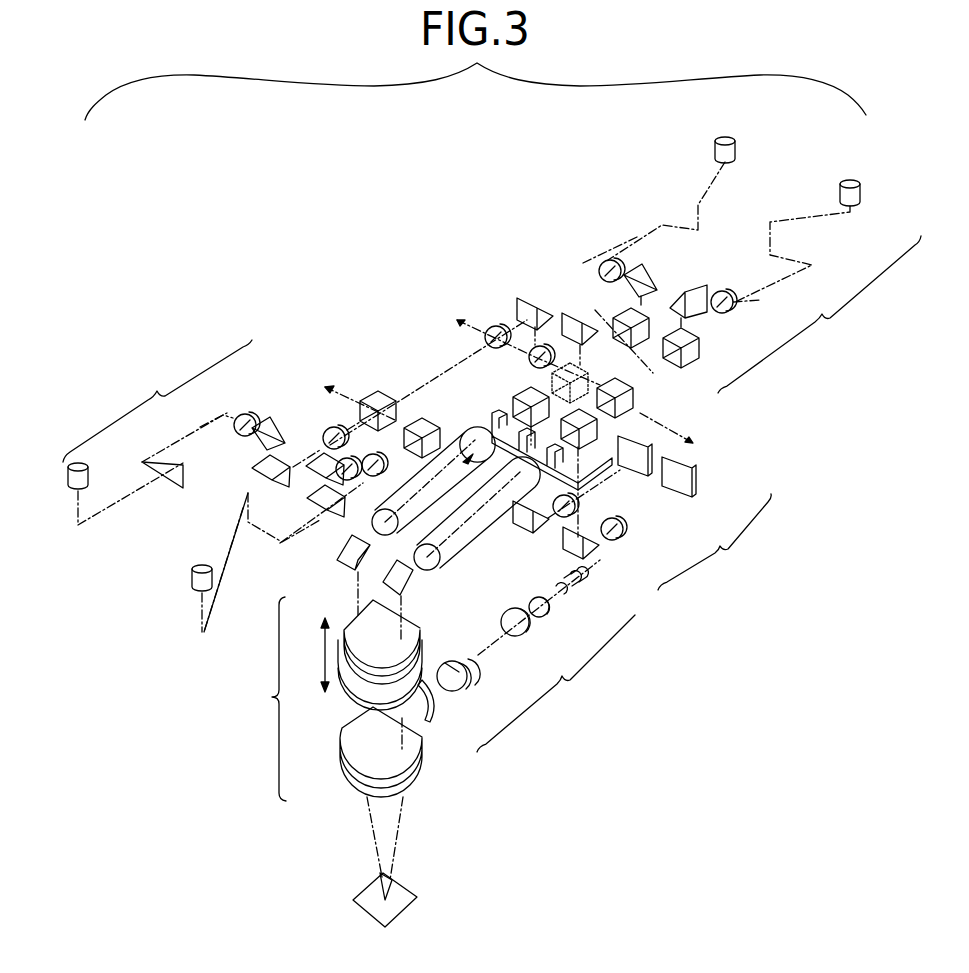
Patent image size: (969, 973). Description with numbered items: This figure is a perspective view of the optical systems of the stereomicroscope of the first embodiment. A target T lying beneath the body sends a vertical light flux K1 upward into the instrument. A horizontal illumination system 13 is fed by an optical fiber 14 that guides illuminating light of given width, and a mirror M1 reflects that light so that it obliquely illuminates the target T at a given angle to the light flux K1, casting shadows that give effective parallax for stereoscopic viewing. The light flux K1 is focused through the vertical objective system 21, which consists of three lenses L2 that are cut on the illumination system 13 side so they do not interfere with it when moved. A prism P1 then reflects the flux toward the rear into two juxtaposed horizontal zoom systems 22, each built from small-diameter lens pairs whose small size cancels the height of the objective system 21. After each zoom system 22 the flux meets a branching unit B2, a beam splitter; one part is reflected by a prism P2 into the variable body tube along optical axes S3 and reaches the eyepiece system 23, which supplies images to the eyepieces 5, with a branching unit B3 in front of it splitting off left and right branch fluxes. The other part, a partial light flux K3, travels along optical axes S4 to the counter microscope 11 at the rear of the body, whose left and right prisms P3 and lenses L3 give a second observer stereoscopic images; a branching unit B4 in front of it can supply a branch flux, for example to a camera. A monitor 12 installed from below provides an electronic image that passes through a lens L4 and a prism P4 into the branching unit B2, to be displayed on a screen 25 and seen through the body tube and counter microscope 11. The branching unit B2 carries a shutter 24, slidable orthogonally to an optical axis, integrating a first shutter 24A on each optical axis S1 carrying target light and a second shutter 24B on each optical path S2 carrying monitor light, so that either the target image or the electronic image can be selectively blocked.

The eyepieces 5 is at (192, 578).
The counter microscope 11 is at (819, 314).
The monitor 12 is at (714, 542).
The illumination system 13 is at (556, 683).
The optical fiber 14 is at (575, 585).
The objective system 21 is at (261, 699).
The zoom systems 22 is at (470, 555).
The eyepiece system 23 is at (157, 401).
The shutter 24 is at (598, 500).
The first shutter 24A is at (500, 430).
The second shutter 24B is at (640, 452).
The screen 25 is at (672, 458).
The branching unit B2 is at (422, 418).
The branching unit B3 is at (378, 395).
The branching unit B4 is at (636, 397).
The light flux K1 is at (405, 828).
The partial light flux K3 is at (785, 296).
The lenses L2 is at (350, 765).
The lenses L3 is at (728, 294).
The lens L4 is at (612, 540).
The mirror M1 is at (435, 702).
The prism P1 is at (380, 583).
The prism P2 is at (530, 300).
The prisms P3 is at (685, 360).
The prism P4 is at (570, 535).
The optical axis S1 is at (410, 575).
The optical path S2 is at (615, 495).
The optical axes S3 is at (490, 326).
The optical axes S4 is at (574, 342).
The target T is at (395, 895).